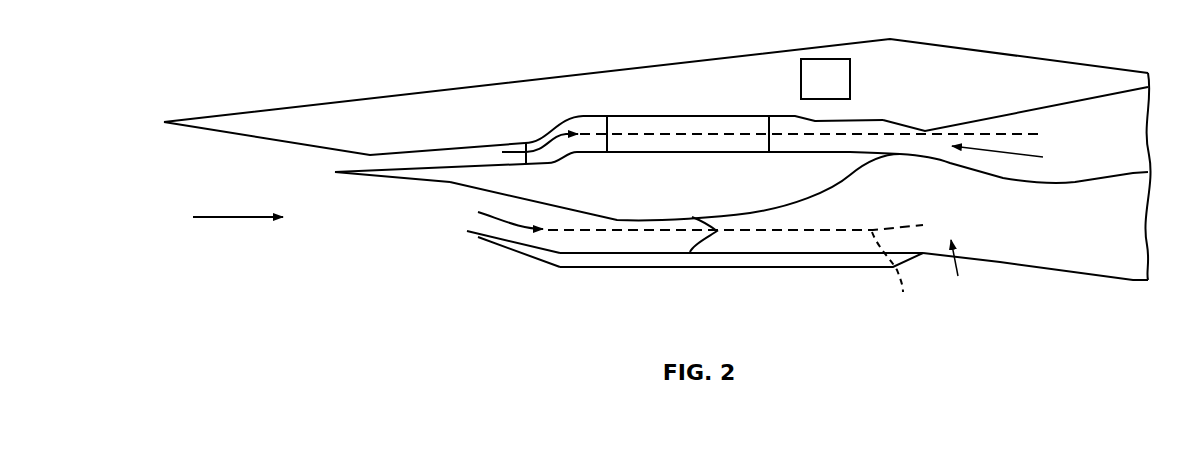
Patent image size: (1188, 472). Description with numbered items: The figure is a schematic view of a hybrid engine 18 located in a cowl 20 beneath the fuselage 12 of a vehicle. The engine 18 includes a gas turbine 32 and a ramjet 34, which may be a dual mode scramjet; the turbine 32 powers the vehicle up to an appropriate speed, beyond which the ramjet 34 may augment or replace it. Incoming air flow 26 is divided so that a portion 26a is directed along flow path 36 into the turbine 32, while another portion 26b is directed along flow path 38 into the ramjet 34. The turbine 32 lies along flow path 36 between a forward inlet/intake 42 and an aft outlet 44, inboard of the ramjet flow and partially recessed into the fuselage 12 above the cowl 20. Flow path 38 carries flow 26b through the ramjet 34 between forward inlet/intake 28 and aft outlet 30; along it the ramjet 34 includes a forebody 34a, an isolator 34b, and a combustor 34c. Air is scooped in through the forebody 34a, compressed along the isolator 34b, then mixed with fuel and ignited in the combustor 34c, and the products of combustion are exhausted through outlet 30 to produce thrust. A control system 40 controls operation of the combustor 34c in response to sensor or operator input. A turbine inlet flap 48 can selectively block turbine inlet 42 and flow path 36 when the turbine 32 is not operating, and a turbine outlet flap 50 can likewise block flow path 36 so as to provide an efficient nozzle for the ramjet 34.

The fuselage 12 is at (395, 108).
The engine 18 is at (499, 63).
The cowl 20 is at (823, 268).
The air flow 26 is at (240, 218).
The portion of air flow 26a is at (550, 141).
The portion of air flow 26b is at (517, 238).
The forward inlet/intake 28 is at (432, 238).
The aft outlet 30 is at (962, 271).
The gas turbine 32 is at (647, 116).
The ramjet 34 is at (739, 243).
The forebody 34a is at (465, 185).
The isolator 34b is at (651, 247).
The combustor 34c is at (734, 219).
The flow path 36 is at (731, 134).
The flow path 38 is at (895, 276).
The control system 40 is at (840, 92).
The forward inlet/intake 42 is at (326, 162).
The aft outlet 44 is at (1014, 161).
The turbine inlet flap 48 is at (378, 177).
The turbine outlet flap 50 is at (899, 155).